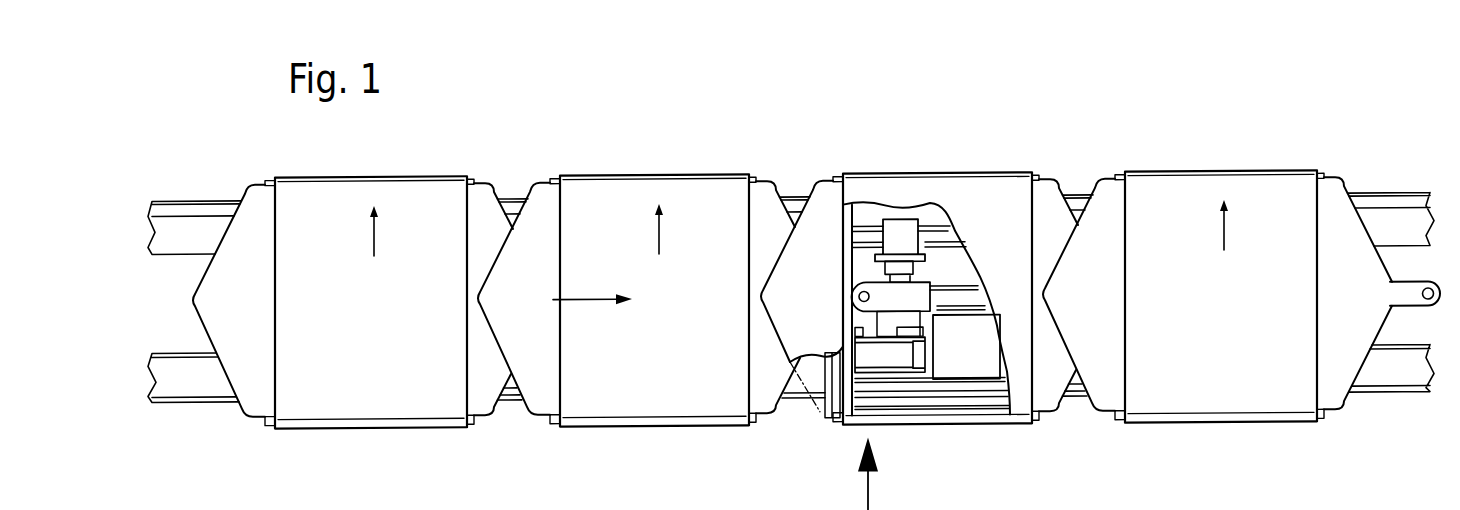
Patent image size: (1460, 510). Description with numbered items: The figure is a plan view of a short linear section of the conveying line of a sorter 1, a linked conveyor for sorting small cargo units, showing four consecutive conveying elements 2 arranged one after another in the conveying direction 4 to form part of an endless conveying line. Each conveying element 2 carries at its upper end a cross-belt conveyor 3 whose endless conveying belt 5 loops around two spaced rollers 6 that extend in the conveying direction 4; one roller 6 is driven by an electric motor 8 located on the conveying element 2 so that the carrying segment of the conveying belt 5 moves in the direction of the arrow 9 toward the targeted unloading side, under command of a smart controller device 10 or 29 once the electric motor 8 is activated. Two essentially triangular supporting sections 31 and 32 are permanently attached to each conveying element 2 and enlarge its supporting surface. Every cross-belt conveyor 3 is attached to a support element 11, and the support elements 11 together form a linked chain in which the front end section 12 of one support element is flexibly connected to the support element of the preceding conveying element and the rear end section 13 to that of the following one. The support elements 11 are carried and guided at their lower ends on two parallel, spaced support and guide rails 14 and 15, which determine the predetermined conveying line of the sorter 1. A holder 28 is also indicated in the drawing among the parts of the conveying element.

The sorter 1 is at (1146, 146).
The conveying element 2 is at (340, 166).
The cross-belt conveyor 3 is at (398, 190).
The conveying direction 4 is at (596, 298).
The conveying belt 5 is at (380, 327).
The roller 6 is at (473, 178).
The electric motor 8 is at (893, 358).
The arrow 9 is at (1242, 240).
The controller device 10 is at (975, 396).
The controller device 29 is at (970, 362).
The support element 11 is at (933, 267).
The front end section 12 is at (1442, 270).
The rear end section 13 is at (863, 268).
The support and guide rail 14 is at (1392, 204).
The support and guide rail 15 is at (1397, 384).
The holder 28 is at (900, 228).
The supporting section 31 is at (487, 241).
The supporting section 32 is at (240, 239).